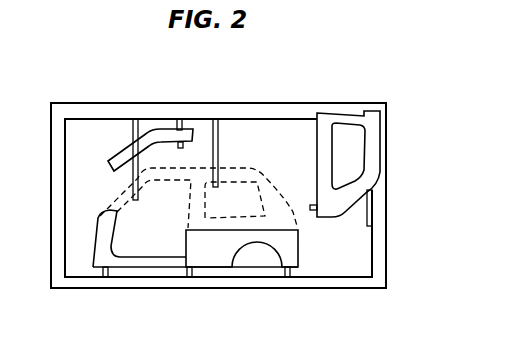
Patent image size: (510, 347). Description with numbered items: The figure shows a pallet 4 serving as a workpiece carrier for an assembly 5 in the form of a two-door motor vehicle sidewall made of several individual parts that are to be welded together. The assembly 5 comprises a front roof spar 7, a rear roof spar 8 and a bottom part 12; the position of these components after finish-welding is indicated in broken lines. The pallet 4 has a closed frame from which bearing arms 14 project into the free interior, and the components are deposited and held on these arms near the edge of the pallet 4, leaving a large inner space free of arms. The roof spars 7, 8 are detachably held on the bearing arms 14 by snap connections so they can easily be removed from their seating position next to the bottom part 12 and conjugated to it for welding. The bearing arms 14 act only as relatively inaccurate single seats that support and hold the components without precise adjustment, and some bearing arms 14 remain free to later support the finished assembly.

The pallet 4 is at (378, 282).
The assembly 5 is at (235, 268).
The front roof spar 7 is at (173, 136).
The rear roof spar 8 is at (230, 175).
The bottom part 12 is at (215, 252).
The bearing arms 14 is at (134, 129).